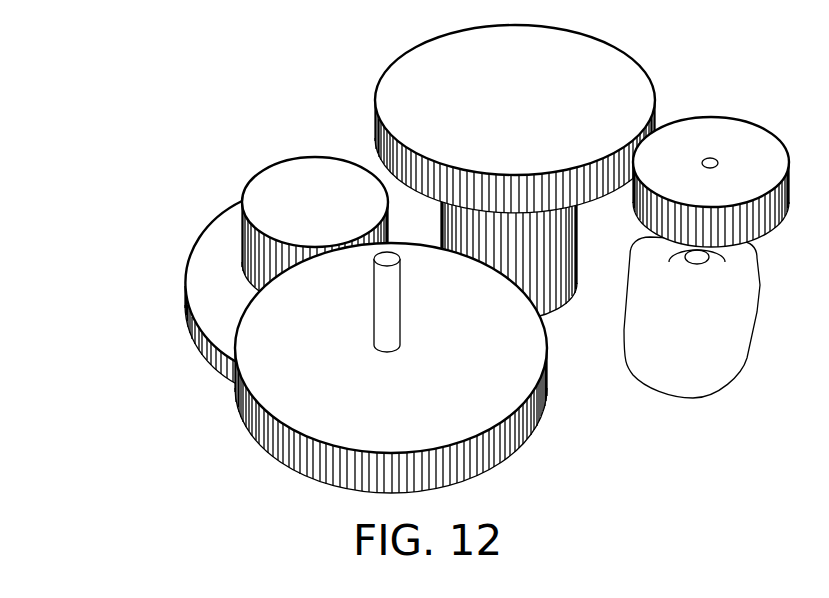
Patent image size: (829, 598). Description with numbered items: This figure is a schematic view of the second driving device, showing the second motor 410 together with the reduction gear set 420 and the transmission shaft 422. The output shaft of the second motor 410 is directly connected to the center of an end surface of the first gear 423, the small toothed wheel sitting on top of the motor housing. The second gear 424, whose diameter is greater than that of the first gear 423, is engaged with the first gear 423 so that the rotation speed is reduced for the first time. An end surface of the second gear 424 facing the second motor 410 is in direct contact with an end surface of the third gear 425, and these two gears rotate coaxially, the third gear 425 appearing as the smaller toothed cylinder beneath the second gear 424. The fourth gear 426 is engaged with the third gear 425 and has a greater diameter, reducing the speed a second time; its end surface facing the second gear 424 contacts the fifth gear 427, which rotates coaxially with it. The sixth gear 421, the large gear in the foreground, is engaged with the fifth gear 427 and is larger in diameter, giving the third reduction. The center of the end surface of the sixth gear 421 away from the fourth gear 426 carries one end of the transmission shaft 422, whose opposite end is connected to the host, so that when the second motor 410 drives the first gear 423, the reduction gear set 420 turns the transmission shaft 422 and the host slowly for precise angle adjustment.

The second motor 410 is at (645, 343).
The reduction gear set 420 is at (409, 259).
The sixth gear 421 is at (303, 417).
The transmission shaft 422 is at (387, 314).
The first gear 423 is at (672, 142).
The second gear 424 is at (425, 55).
The third gear 425 is at (447, 222).
The fourth gear 426 is at (210, 307).
The fifth gear 427 is at (267, 197).